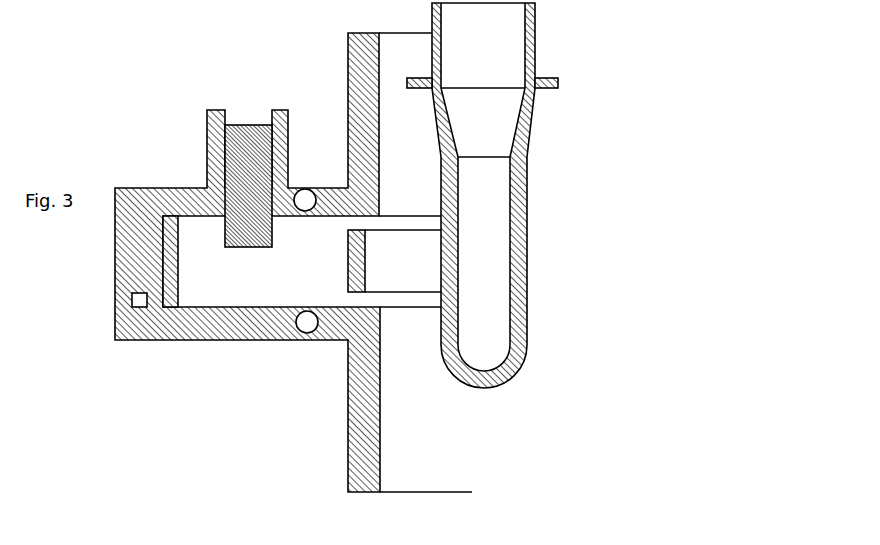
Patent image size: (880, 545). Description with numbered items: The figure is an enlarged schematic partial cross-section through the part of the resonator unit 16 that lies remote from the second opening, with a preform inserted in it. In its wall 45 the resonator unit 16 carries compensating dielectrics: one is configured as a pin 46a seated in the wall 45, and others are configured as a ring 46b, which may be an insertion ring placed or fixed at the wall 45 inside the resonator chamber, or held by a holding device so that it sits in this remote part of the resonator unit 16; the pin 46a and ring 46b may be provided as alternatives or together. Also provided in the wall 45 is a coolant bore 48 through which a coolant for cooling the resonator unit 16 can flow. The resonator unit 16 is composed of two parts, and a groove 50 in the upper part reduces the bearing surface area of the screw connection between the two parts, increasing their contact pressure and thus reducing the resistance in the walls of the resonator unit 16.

The resonator unit 16 is at (246, 414).
The wall 45 is at (182, 200).
The compensating dielectric pin 46a is at (243, 123).
The compensating dielectric ring 46b is at (348, 273).
The coolant bore 48 is at (305, 189).
The groove 50 is at (147, 308).